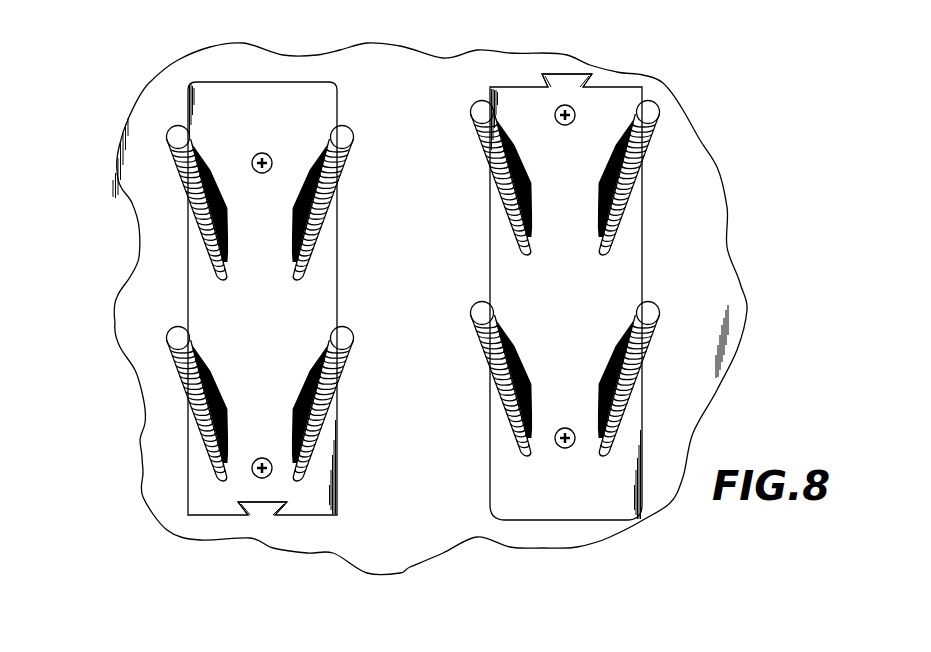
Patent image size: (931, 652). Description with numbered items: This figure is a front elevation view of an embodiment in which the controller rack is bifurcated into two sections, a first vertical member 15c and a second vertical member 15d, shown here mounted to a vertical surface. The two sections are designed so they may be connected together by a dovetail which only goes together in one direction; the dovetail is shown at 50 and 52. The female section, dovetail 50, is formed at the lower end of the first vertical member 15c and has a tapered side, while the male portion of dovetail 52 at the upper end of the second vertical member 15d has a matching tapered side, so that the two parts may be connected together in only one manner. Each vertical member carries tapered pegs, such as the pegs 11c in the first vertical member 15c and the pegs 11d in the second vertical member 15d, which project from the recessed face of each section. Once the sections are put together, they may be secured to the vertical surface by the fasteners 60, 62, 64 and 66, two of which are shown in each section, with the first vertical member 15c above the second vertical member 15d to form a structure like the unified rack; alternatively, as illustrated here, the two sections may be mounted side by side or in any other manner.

The dovetail 50 is at (262, 508).
The dovetail 52 is at (570, 80).
The tapered pin 11c is at (345, 130).
The tapered pin 11d is at (650, 108).
The first vertical member 15c is at (338, 287).
The second vertical member 15d is at (642, 285).
The fastener 60 is at (262, 153).
The fastener 62 is at (262, 458).
The fastener 64 is at (565, 125).
The fastener 66 is at (565, 428).